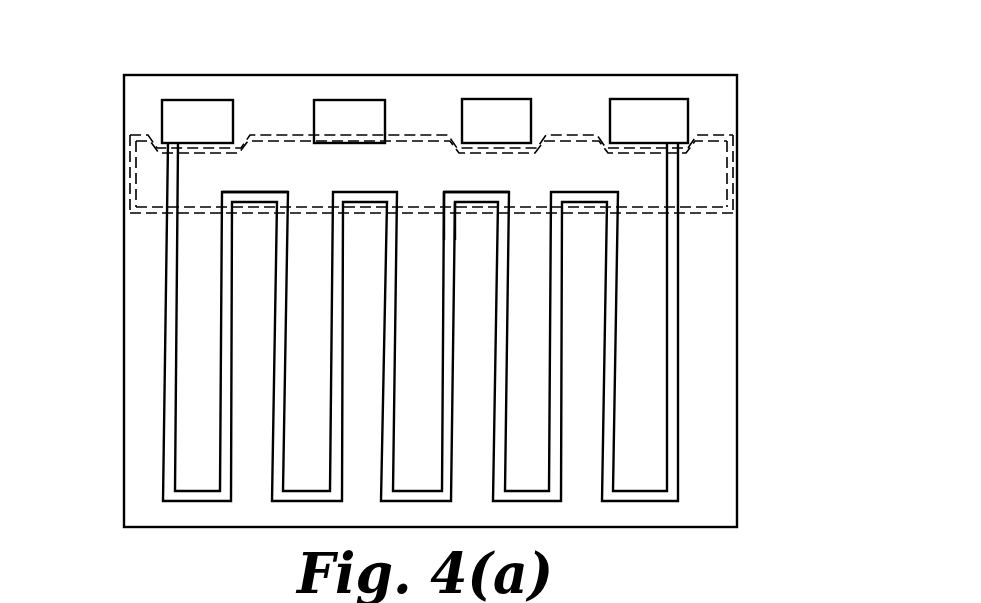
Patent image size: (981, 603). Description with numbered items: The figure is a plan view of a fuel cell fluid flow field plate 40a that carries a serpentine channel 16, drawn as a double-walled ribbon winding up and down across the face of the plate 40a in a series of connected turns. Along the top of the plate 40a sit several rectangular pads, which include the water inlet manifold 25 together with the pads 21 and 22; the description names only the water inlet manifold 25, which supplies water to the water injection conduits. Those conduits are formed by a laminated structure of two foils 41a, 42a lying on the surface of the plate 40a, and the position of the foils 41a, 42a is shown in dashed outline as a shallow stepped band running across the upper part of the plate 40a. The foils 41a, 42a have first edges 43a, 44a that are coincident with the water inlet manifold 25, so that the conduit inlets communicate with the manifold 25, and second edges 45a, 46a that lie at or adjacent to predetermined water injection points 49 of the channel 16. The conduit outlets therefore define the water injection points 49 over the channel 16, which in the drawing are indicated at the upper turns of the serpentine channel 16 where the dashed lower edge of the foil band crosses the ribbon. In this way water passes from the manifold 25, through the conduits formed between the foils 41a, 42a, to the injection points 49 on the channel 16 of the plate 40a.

The channel 16 is at (165, 413).
The electrode pad 21 is at (187, 110).
The electrode pad 22 is at (637, 110).
The water inlet manifold 25 is at (350, 110).
The fluid flow field plate 40a is at (717, 365).
The foil 41a is at (148, 206).
The foil 42a is at (157, 213).
The first edge 43a is at (333, 135).
The first edge 44a is at (367, 142).
The second edge 45a is at (443, 212).
The second edge 46a is at (443, 212).
The water injection point 49 is at (281, 198).